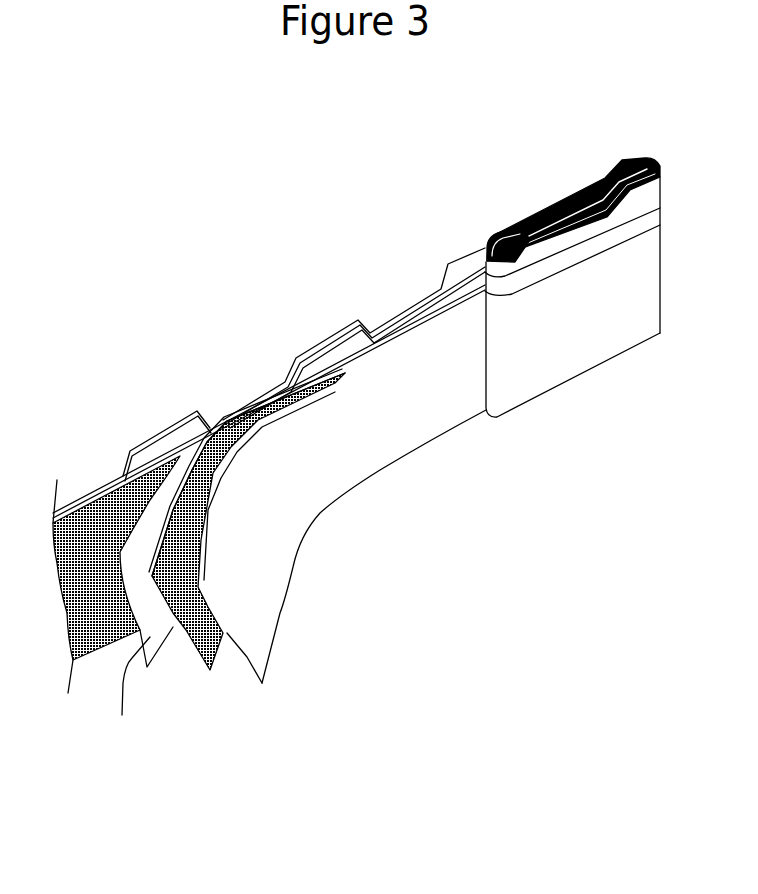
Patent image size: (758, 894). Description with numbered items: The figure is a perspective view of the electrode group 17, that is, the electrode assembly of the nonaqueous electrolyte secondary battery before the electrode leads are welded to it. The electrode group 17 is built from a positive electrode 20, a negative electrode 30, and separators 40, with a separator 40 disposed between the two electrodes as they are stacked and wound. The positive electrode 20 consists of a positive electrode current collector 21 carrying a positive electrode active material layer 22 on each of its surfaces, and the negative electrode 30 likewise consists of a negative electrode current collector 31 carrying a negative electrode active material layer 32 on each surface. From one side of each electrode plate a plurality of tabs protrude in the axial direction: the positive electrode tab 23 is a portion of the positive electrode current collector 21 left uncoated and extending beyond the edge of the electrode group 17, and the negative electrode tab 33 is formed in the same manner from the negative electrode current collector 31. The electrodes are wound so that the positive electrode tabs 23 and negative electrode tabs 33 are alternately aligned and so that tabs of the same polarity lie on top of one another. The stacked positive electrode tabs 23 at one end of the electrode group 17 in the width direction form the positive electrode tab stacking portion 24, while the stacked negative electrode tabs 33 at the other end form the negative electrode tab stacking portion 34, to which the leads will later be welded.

The electrode group 17 is at (338, 170).
The positive electrode 20 is at (117, 383).
The positive electrode current collector 21 is at (73, 503).
The positive electrode active material layer 22 is at (107, 513).
The positive electrode tab 23 is at (157, 447).
The positive electrode tab stacking portion 24 is at (508, 227).
The negative electrode 30 is at (240, 735).
The negative electrode current collector 31 is at (170, 660).
The negative electrode active material layer 32 is at (218, 670).
The negative electrode tab 33 is at (342, 340).
The negative electrode tab stacking portion 34 is at (638, 160).
The separator 40 is at (262, 598).